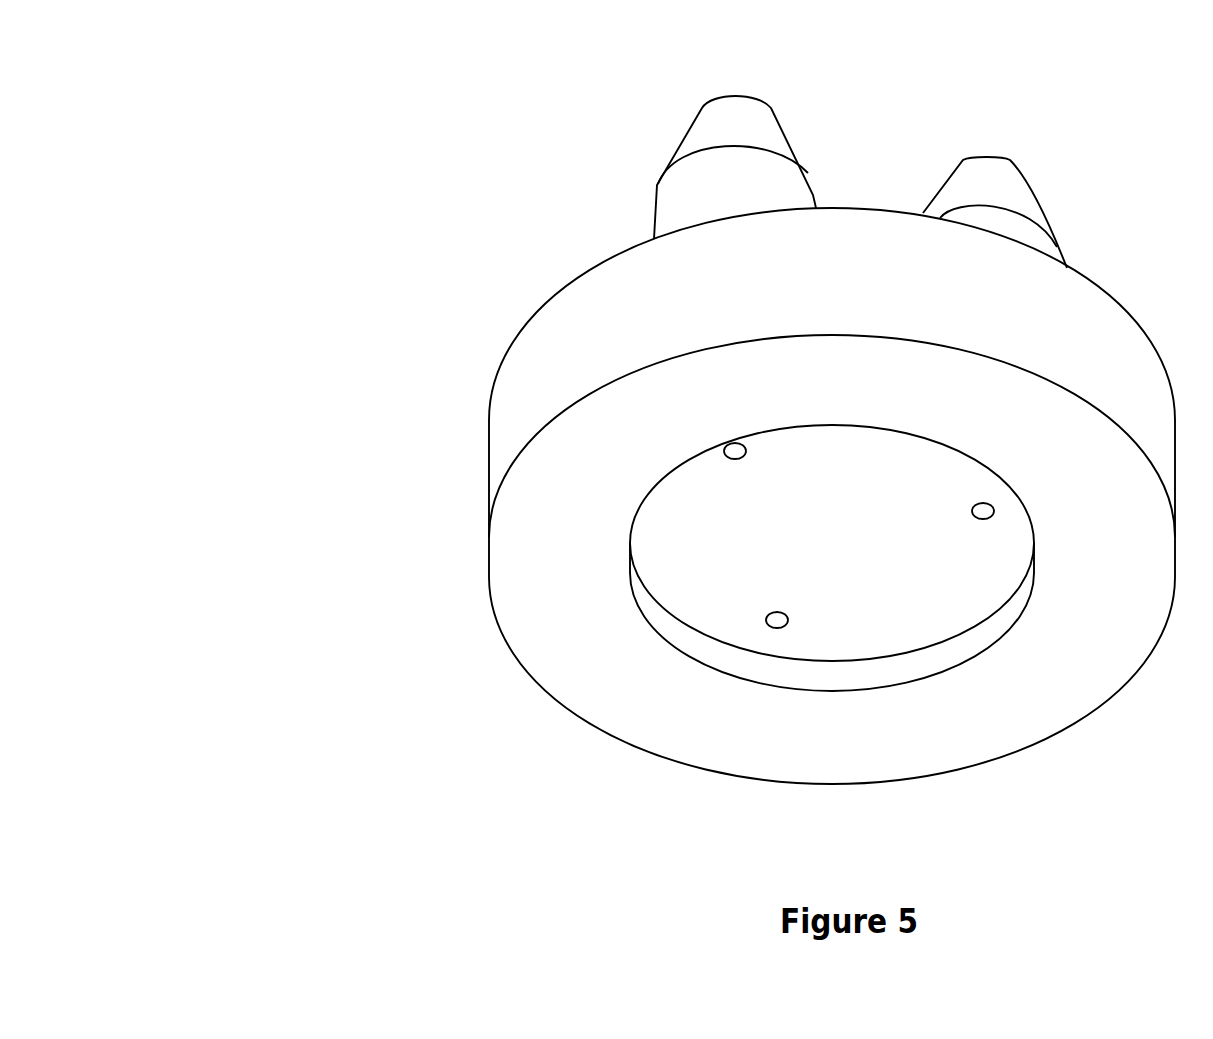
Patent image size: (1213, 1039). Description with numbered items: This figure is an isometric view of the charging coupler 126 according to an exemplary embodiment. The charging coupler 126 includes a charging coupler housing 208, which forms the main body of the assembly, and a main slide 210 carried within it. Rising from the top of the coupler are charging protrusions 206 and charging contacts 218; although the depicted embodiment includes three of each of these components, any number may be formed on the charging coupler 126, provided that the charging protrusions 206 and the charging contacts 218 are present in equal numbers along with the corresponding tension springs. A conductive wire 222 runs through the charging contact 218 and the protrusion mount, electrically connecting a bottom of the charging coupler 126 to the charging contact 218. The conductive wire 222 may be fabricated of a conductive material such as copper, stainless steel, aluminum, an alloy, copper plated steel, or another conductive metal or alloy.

The charging coupler 126 is at (321, 77).
The charging protrusion 206 is at (652, 123).
The charging coupler housing 208 is at (873, 751).
The main slide 210 is at (910, 567).
The charging contact 218 is at (1037, 197).
The conductive wire 222 is at (747, 450).